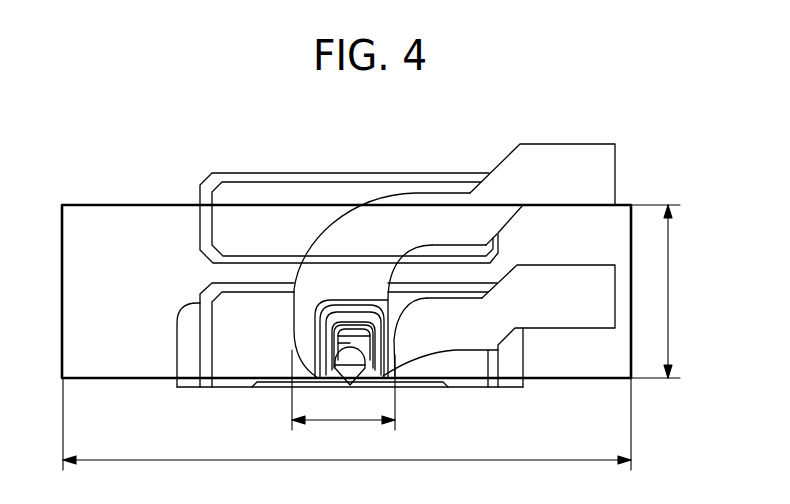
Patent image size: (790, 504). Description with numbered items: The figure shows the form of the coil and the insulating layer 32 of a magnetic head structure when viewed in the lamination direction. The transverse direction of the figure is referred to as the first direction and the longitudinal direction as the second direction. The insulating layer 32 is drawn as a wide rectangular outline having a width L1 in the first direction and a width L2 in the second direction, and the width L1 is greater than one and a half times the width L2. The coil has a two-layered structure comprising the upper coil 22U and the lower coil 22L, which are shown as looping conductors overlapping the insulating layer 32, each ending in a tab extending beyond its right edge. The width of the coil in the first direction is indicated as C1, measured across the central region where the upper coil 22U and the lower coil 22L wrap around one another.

The insulating layer 32 is at (119, 218).
The upper coil 22U is at (517, 158).
The lower coil 22L is at (573, 318).
The width of the insulating layer in the first direction L1 is at (347, 424).
The width of the insulating layer in the second direction L2 is at (664, 291).
The width of the coil in the first direction C1 is at (343, 390).